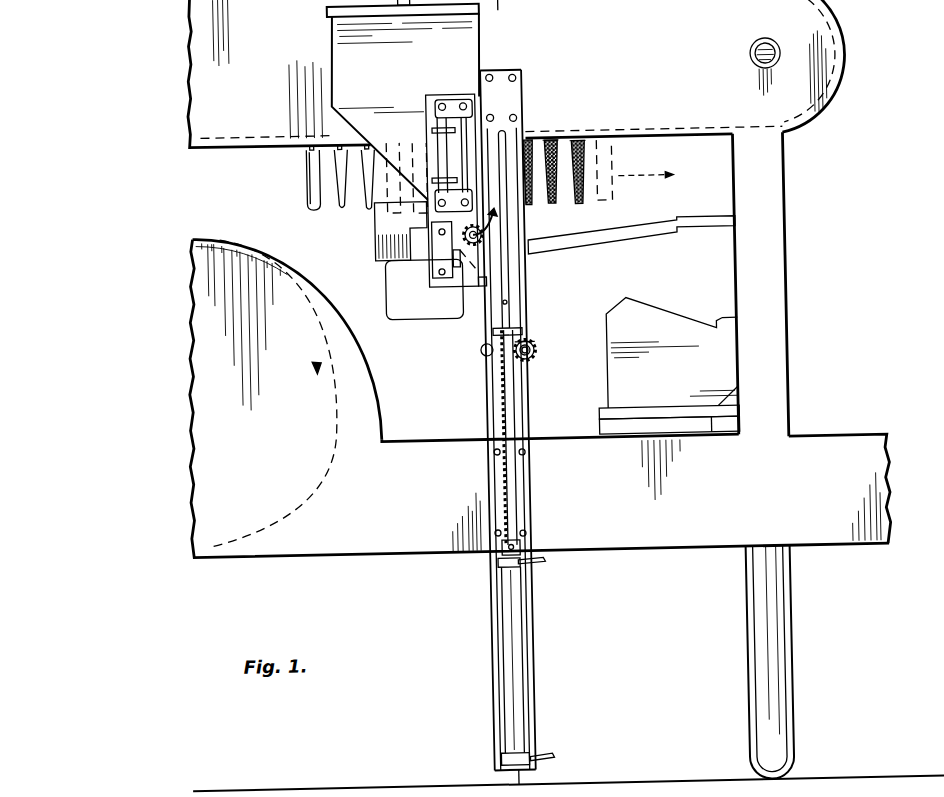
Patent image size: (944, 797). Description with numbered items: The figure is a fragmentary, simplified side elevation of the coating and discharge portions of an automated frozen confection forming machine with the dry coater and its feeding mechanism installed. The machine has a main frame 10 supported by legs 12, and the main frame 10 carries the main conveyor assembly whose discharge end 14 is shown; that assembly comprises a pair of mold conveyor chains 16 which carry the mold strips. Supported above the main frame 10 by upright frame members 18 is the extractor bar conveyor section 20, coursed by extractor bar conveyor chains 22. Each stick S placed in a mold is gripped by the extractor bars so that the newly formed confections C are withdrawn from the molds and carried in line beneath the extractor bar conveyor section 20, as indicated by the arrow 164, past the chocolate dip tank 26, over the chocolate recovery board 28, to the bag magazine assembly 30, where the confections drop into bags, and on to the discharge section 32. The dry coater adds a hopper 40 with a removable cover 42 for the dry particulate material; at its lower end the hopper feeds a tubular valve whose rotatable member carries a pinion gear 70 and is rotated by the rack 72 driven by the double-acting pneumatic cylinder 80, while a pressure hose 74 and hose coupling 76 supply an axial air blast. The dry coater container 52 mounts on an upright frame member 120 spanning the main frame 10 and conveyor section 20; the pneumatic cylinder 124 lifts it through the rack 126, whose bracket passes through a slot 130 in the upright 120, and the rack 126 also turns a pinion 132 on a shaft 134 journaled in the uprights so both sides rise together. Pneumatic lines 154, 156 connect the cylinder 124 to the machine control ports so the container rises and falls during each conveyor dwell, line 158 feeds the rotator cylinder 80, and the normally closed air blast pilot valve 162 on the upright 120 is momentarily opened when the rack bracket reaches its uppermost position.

The main frame 10 is at (412, 503).
The legs 12 is at (773, 629).
The discharge end of main conveyor assembly 14 is at (363, 377).
The mold conveyor chains 16 is at (339, 310).
The upright frame members 18 is at (781, 221).
The extractor bar conveyor section 20 is at (687, 71).
The extractor bar conveyor chains 22 is at (848, 57).
The chocolate dip tank 26 is at (420, 308).
The chocolate recovery board 28 is at (654, 232).
The bag magazine assembly 30 is at (664, 323).
The discharge section 32 is at (866, 434).
The hopper 40 is at (369, 48).
The removable cover 42 is at (335, 8).
The dry coater container 52 is at (529, 318).
The pinion gear 70 is at (488, 241).
The rack 72 is at (441, 216).
The pressure hose 74 is at (502, 223).
The hose coupling 76 is at (492, 251).
The double-acting pneumatic cylinder 80 is at (468, 136).
The upright frame member 120 is at (487, 393).
The pneumatic cylinder 124 is at (503, 637).
The rack 126 is at (517, 474).
The slot 130 is at (512, 302).
The pinion 132 is at (541, 357).
The shaft 134 is at (533, 342).
The line 154 is at (539, 564).
The line 156 is at (543, 757).
The line 158 is at (432, 135).
The air blast pilot valve 162 is at (436, 180).
The arrow 164 is at (645, 173).
The stick S is at (310, 148).
The frozen confection C is at (317, 206).